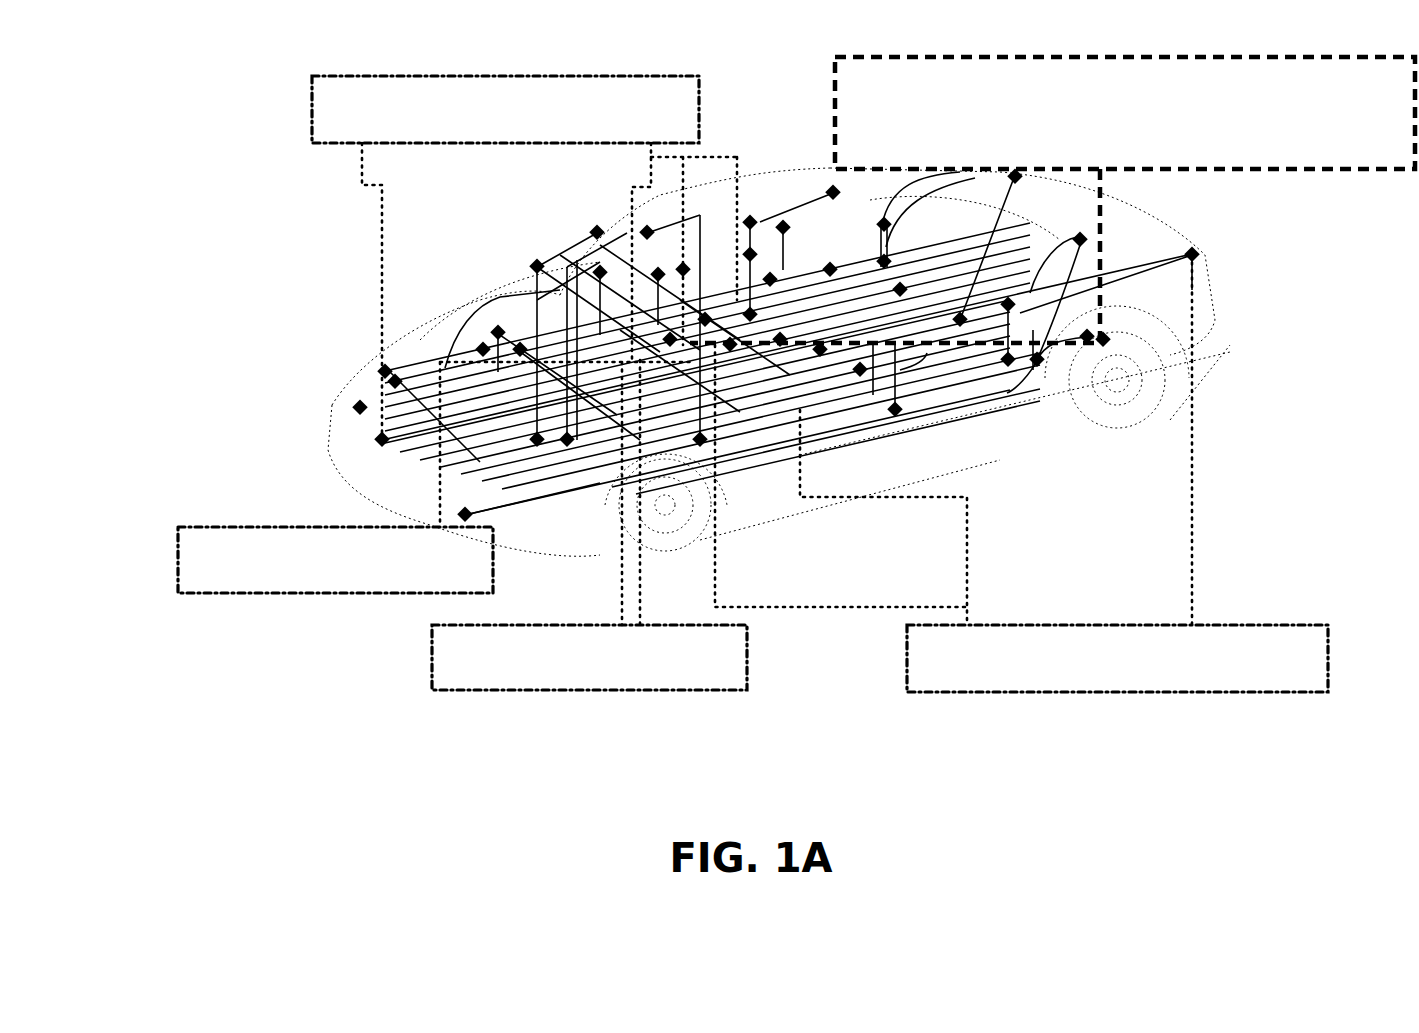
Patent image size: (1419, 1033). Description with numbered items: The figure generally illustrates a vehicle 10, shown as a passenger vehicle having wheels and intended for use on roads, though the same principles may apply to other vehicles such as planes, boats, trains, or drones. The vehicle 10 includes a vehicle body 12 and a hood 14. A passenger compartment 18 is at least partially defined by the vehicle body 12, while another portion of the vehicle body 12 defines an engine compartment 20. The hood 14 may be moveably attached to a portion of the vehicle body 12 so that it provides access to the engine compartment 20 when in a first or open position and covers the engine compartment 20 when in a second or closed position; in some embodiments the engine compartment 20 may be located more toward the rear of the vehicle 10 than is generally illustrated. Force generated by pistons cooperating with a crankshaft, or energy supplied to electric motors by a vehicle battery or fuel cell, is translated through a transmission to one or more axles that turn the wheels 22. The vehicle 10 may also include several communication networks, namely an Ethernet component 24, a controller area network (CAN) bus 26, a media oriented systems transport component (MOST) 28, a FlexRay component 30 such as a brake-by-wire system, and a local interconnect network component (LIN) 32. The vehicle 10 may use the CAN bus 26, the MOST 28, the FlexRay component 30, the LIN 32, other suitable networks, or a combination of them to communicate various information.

The vehicle 10 is at (118, 150).
The vehicle body 12 is at (694, 251).
The hood 14 is at (478, 298).
The passenger compartment 18 is at (652, 238).
The engine compartment 20 is at (353, 349).
The wheels 22 is at (603, 521).
The Ethernet component 24 is at (163, 540).
The controller area network (CAN) bus 26 is at (298, 82).
The media oriented systems transport component (MOST) 28 is at (843, 46).
The FlexRay component 30 is at (413, 659).
The local interconnect network component (LIN) 32 is at (888, 665).